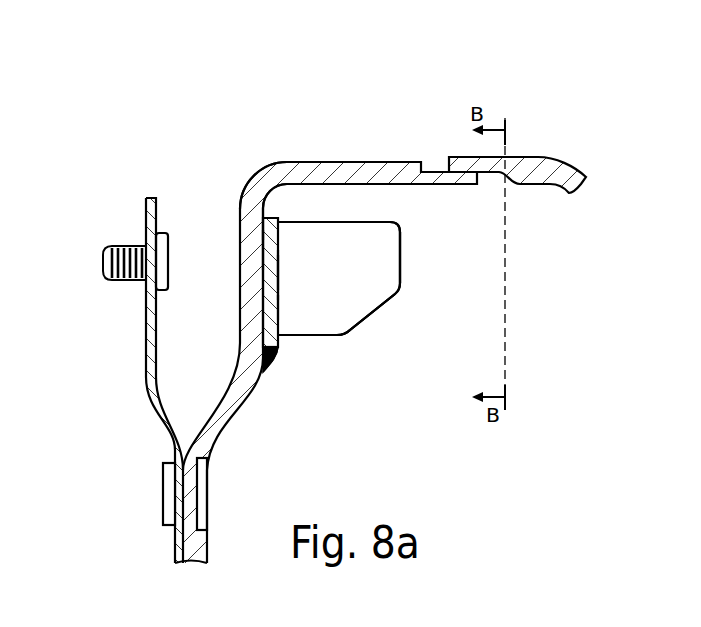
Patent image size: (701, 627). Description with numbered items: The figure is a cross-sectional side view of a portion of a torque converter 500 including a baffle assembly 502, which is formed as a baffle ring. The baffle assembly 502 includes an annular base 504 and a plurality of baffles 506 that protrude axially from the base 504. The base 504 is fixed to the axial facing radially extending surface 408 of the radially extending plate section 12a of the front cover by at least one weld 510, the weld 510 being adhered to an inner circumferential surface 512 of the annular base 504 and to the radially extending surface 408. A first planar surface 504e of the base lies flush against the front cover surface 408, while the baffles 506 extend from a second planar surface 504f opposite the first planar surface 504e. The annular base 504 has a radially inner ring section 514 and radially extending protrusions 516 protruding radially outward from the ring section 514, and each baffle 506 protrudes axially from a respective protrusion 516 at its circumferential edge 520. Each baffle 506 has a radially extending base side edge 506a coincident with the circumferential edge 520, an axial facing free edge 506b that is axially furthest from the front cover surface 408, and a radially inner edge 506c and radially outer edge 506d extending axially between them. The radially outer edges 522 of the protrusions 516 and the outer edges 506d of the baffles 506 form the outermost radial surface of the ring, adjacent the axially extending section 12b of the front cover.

The radially extending plate section 12a is at (244, 258).
The axially extending section 12b is at (372, 174).
The axial facing radially extending surface 408 is at (273, 304).
The torque converter 500 is at (514, 110).
The baffle assembly 502 is at (418, 235).
The annular base 504 is at (281, 307).
The first planar surface 504e is at (260, 250).
The second planar surface 504f is at (280, 270).
The baffle 506 is at (388, 274).
The base side edge 506a is at (262, 278).
The free edge 506b is at (402, 253).
The radially inner edge 506c is at (352, 326).
The radially outer edge 506d is at (313, 222).
The weld 510 is at (268, 366).
The inner circumferential surface 512 is at (280, 350).
The radially inner ring section 514 is at (268, 342).
The radially extending protrusion 516 is at (270, 237).
The circumferential edge 520 is at (260, 250).
The radially outer edge 522 is at (242, 205).